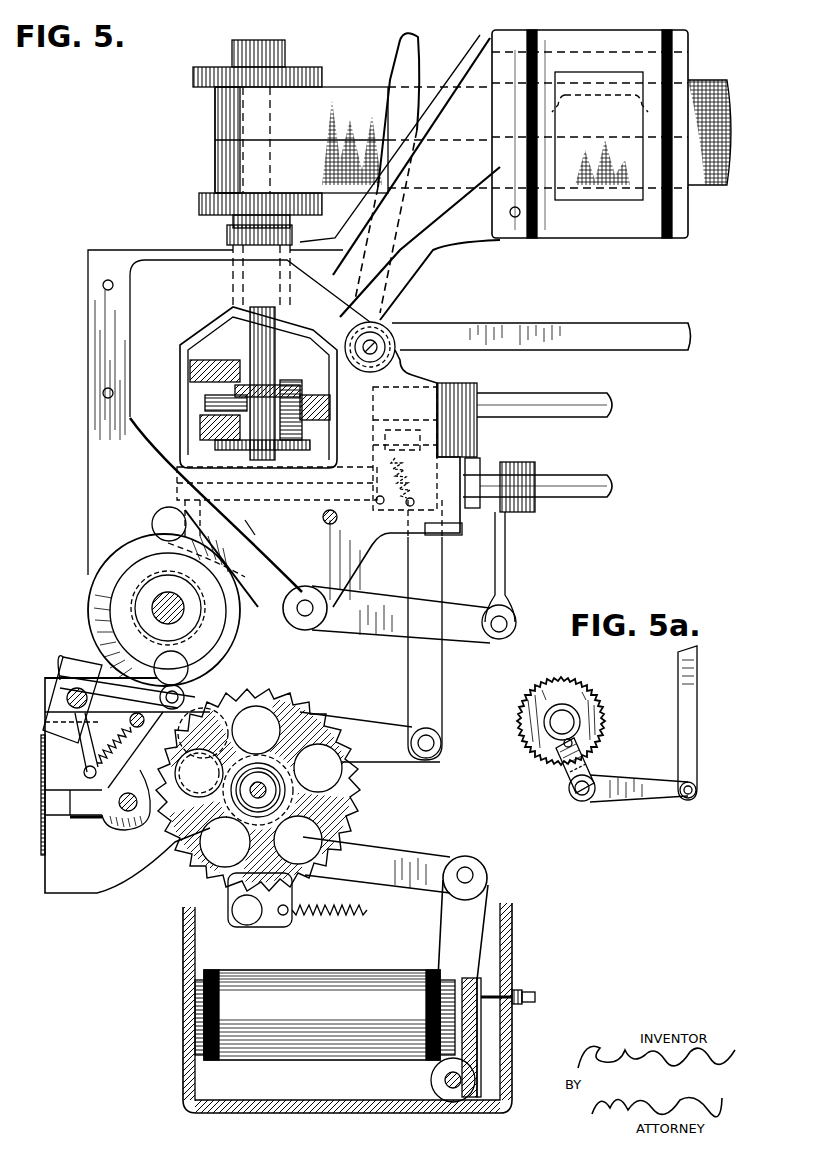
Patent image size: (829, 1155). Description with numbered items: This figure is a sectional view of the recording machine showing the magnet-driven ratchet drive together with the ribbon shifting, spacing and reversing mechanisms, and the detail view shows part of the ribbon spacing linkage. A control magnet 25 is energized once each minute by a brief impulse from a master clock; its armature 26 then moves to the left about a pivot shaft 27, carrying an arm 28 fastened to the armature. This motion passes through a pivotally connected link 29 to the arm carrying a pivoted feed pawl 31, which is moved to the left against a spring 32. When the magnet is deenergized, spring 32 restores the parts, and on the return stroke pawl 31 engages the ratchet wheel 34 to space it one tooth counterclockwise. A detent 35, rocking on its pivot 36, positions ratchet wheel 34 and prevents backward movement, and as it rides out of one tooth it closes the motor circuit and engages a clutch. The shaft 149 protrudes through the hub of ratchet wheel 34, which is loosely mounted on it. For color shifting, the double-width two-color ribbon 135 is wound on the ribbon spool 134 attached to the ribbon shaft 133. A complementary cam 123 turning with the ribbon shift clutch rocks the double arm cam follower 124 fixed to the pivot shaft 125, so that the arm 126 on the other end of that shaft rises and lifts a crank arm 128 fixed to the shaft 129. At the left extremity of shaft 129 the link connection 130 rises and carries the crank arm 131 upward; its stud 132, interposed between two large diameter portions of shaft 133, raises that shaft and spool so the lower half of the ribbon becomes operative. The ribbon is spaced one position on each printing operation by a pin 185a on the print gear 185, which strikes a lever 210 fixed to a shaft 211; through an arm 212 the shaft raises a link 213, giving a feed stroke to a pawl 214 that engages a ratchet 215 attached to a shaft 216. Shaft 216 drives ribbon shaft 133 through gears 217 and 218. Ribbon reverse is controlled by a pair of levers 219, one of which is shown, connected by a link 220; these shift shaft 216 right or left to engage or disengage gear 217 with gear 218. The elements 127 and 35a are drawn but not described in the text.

In FIG. 5, the ribbon spool 134 is at (225, 75).
In FIG. 5, the ribbon 135 is at (330, 100).
In FIG. 5, the levers 219 is at (417, 48).
In FIG. 5, the link 220 is at (526, 323).
In FIG. 5, the ratchet 215 is at (400, 358).
In FIG. 5, the shaft 216 is at (553, 389).
In FIG. 5, the pawl 214 is at (407, 442).
In FIG. 5, the crank arm 128 is at (535, 470).
In FIG. 5, the shaft 129 is at (595, 480).
In FIG. 5, the gear 217 is at (313, 437).
In FIG. 5, the gear 218 is at (305, 445).
In FIG. 5, the crank arm 131 is at (213, 373).
In FIG. 5, the stud 132 is at (230, 392).
In FIG. 5, the ribbon shaft 133 is at (270, 330).
In FIG. 5, the link connection 130 is at (213, 430).
In FIG. 5, the complementary cam 123 is at (148, 555).
In FIG. 5, the double arm cam follower 124 is at (263, 570).
In FIG. 5, the pivot shaft 125 is at (305, 630).
In FIG. 5, the link 127 is at (500, 566).
In FIG. 5, the arm 126 is at (455, 625).
In FIG. 5, the link 213 is at (442, 698).
In FIG. 5A, the link 213 is at (690, 732).
In FIG. 5, the arm 212 is at (370, 735).
In FIG. 5A, the arm 212 is at (638, 778).
In FIG. 5, the shaft 149 is at (262, 787).
In FIG. 5, the ratchet wheel 34 is at (340, 807).
In FIG. 5, the link 29 is at (415, 855).
In FIG. 5, the arm 28 is at (470, 910).
In FIG. 5, the armature 26 is at (478, 997).
In FIG. 5, the pivot shaft 27 is at (470, 1078).
In FIG. 5, the control magnet 25 is at (258, 1000).
In FIG. 5, the feed pawl 31 is at (268, 912).
In FIG. 5, the spring 32 is at (340, 916).
In FIG. 5, the bracket 35a is at (85, 817).
In FIG. 5, the detent 35 is at (133, 812).
In FIG. 5, the pivot 36 is at (128, 812).
In FIG. 5, the lever 210 is at (258, 707).
In FIG. 5A, the lever 210 is at (562, 765).
In FIG. 5, the shaft 211 is at (199, 773).
In FIG. 5A, the shaft 211 is at (585, 800).
In FIG. 5A, the print gear 185 is at (565, 690).
In FIG. 5A, the pin 185a is at (572, 742).